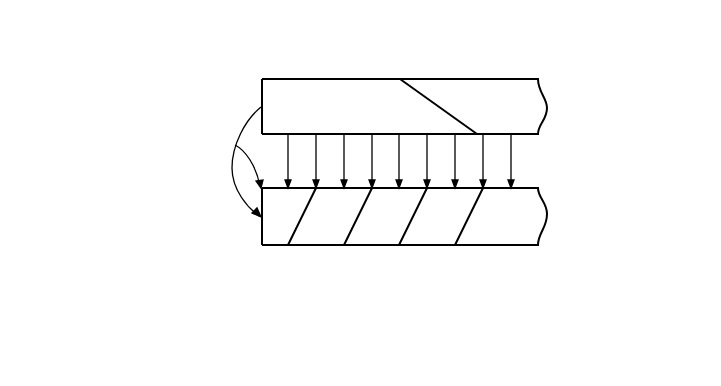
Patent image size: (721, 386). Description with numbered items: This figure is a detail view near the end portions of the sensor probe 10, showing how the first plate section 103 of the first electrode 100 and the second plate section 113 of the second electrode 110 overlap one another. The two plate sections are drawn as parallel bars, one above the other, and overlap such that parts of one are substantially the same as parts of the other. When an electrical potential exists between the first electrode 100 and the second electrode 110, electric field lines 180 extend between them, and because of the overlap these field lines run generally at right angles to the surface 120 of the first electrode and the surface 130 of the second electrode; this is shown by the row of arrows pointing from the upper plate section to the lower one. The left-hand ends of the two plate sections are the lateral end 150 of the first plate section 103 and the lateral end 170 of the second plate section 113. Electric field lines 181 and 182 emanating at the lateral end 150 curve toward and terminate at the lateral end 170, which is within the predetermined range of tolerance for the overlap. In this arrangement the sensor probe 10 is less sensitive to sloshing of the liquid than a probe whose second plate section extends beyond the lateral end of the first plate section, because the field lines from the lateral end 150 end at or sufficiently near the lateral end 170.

The sensor probe 10 is at (105, 92).
The first electrode 100 is at (327, 79).
The first plate section 103 is at (283, 79).
The second electrode 110 is at (333, 246).
The second plate section 113 is at (278, 246).
The surface 120 is at (534, 147).
The surface 130 is at (532, 188).
The lateral end 150 is at (261, 86).
The lateral end 170 is at (261, 237).
The electric field lines 180 is at (547, 157).
The electric field line 181 is at (235, 145).
The electric field line 182 is at (232, 167).